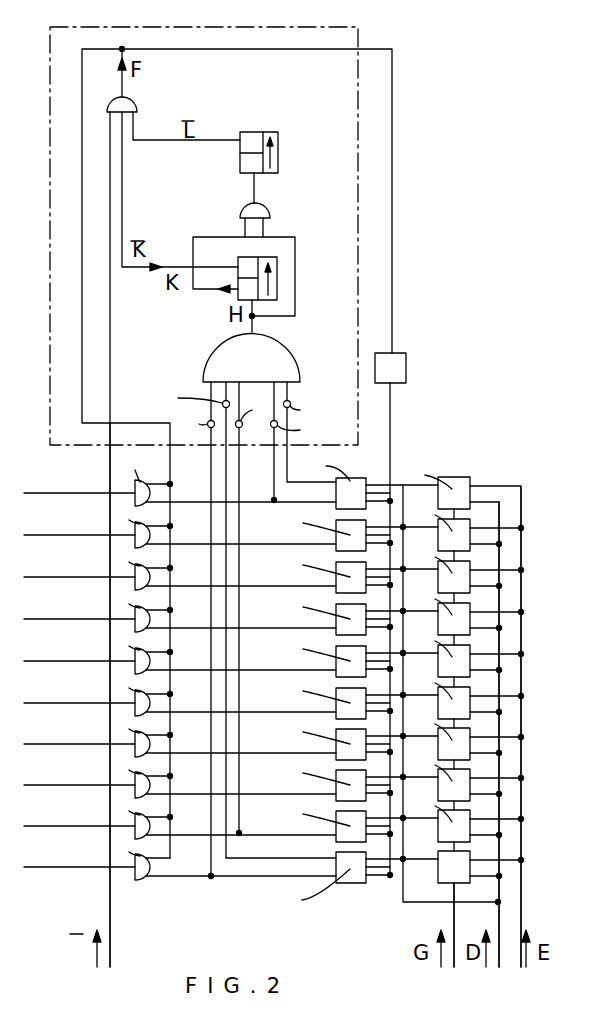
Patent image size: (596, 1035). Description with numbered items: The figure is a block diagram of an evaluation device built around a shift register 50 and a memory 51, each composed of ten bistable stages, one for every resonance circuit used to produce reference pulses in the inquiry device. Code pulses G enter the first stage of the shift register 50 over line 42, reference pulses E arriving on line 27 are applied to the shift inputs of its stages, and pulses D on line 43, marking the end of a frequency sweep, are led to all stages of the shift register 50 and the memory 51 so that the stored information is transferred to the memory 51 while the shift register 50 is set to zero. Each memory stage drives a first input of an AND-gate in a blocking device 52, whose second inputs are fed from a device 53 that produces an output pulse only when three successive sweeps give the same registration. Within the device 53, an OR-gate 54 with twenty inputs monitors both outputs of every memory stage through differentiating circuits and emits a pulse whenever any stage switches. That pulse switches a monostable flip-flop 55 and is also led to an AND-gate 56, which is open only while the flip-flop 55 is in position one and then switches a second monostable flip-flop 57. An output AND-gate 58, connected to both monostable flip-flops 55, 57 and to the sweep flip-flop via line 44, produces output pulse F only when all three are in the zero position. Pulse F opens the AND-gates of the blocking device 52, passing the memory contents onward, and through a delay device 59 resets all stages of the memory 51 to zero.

The device 53 is at (50, 205).
The output AND-gate 58 is at (137, 104).
The second monostable flip-flop 57 is at (240, 162).
The AND-gate 56 is at (242, 212).
The monostable flip-flop 55 is at (238, 298).
The OR-gate 54 is at (207, 376).
The delay device 59 is at (392, 368).
The shift register 50 is at (466, 470).
The memory 51 is at (335, 886).
The blocking device 52 is at (154, 884).
The signal line A-bar 44 is at (110, 903).
The signal line G 42 is at (452, 918).
The signal line D 43 is at (497, 918).
The signal line E 27 is at (521, 882).